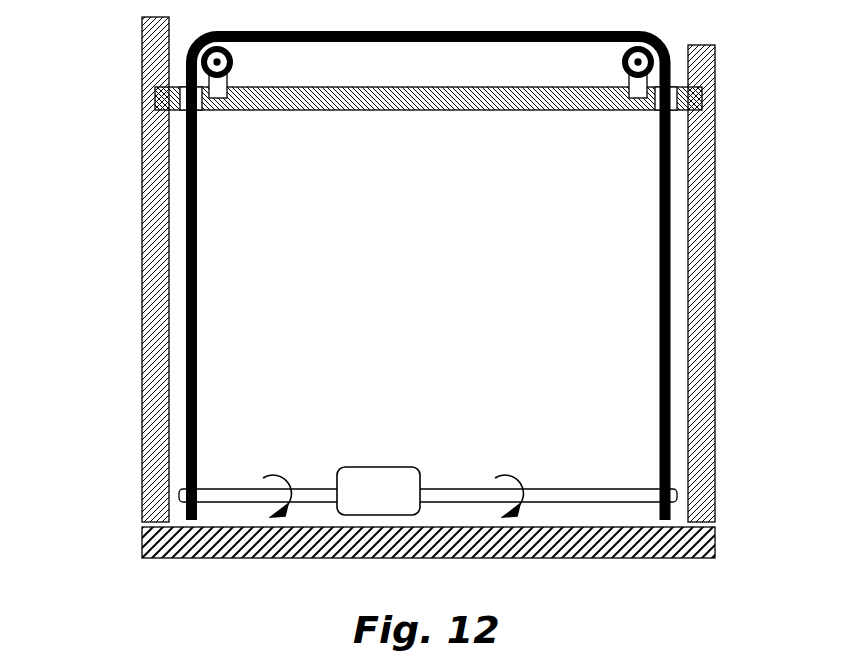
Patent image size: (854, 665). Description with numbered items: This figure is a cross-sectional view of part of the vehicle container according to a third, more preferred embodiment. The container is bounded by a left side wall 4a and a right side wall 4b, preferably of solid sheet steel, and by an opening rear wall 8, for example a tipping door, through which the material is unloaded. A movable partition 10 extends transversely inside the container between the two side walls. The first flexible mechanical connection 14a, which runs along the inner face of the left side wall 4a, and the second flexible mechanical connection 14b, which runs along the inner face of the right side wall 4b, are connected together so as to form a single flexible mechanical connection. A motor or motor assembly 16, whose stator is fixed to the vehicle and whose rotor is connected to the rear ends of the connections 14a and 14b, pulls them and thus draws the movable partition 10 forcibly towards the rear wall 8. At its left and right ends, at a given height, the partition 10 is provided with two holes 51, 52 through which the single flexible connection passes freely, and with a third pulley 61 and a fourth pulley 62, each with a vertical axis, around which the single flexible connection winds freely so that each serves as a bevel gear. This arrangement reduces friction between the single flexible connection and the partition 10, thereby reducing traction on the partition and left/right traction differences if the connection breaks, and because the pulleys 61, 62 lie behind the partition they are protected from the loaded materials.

The left side wall 4a is at (142, 275).
The right side wall 4b is at (705, 228).
The opening rear wall 8 is at (568, 533).
The movable partition 10 is at (423, 110).
The first flexible mechanical connection 14a is at (198, 340).
The second flexible mechanical connection 14b is at (658, 410).
The motor 16 is at (355, 478).
The hole 51 is at (199, 104).
The hole 52 is at (658, 110).
The third pulley 61 is at (233, 53).
The fourth pulley 62 is at (622, 52).